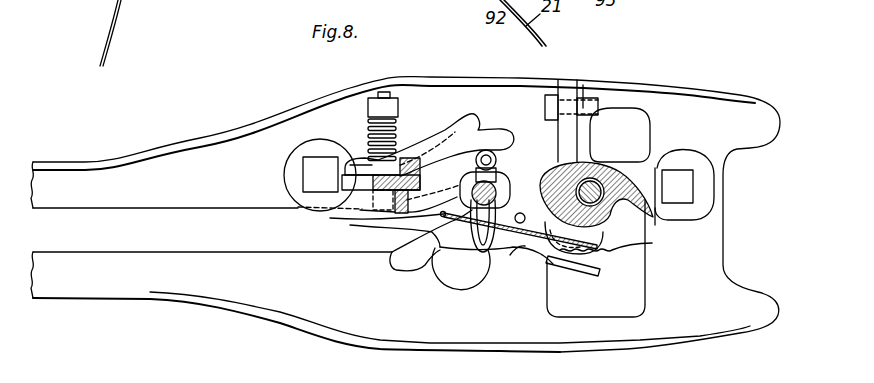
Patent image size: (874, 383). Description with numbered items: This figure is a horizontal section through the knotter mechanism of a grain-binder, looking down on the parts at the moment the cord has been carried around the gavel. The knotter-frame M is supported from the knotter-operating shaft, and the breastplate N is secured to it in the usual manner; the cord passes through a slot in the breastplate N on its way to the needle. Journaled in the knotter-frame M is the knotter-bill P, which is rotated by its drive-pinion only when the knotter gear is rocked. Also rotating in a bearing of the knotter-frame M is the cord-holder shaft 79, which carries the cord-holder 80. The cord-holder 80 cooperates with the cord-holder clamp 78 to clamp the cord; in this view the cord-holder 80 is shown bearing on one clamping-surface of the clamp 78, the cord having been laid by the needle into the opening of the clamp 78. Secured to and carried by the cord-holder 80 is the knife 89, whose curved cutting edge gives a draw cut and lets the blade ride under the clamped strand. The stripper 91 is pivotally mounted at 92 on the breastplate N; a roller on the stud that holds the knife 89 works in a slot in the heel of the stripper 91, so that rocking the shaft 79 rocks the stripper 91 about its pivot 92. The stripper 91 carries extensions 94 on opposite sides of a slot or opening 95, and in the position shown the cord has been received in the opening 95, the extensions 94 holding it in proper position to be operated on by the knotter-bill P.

The breastplate N is at (207, 143).
The knotter-frame M is at (575, 130).
The cord-holder shaft 79 is at (600, 188).
The cord-holder 80 is at (600, 228).
The cord-holder clamp 78 is at (609, 262).
The knife 89 is at (556, 264).
The stripper 91 is at (450, 275).
The pivot of the stripper 92 is at (538, 248).
The extensions 94 is at (468, 118).
The slot or opening 95 is at (395, 223).
The knotter-bill P is at (510, 267).